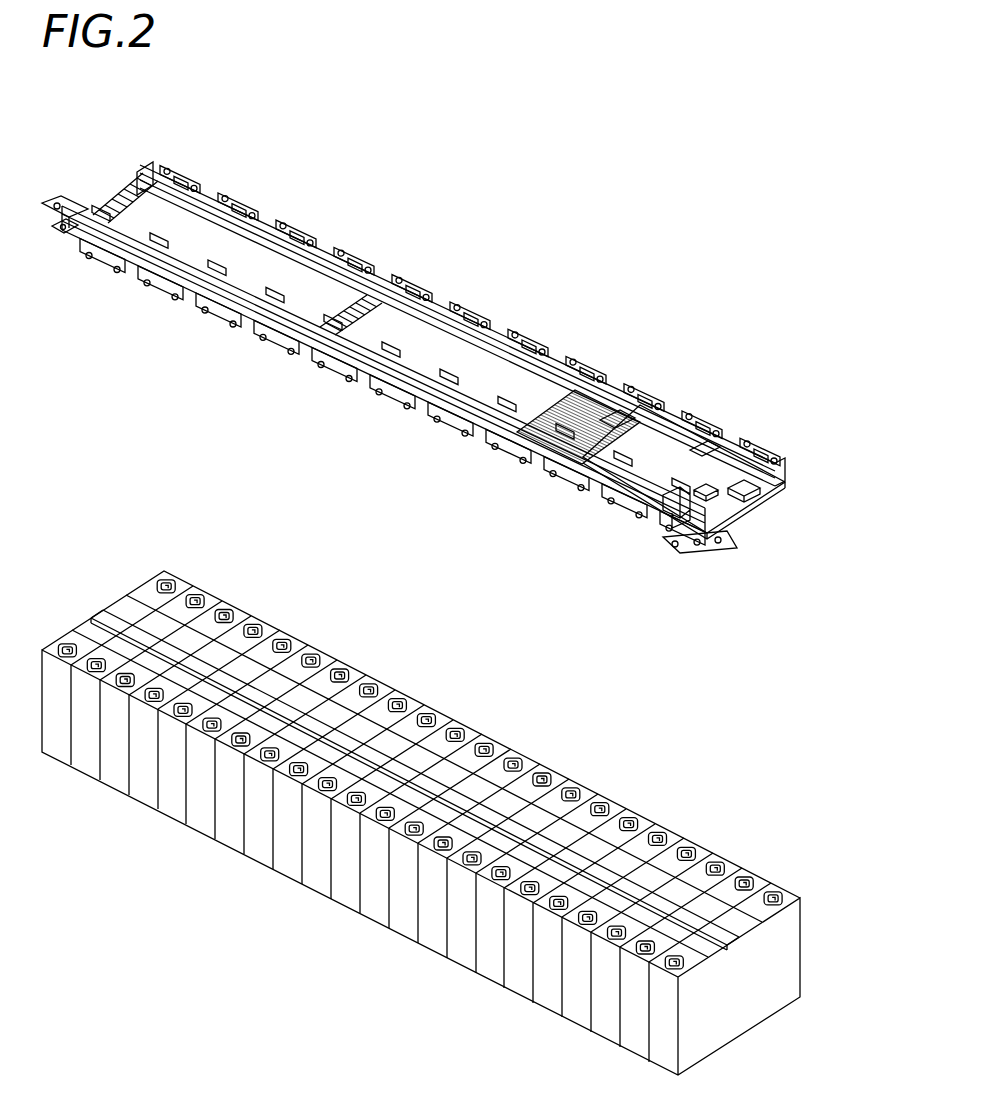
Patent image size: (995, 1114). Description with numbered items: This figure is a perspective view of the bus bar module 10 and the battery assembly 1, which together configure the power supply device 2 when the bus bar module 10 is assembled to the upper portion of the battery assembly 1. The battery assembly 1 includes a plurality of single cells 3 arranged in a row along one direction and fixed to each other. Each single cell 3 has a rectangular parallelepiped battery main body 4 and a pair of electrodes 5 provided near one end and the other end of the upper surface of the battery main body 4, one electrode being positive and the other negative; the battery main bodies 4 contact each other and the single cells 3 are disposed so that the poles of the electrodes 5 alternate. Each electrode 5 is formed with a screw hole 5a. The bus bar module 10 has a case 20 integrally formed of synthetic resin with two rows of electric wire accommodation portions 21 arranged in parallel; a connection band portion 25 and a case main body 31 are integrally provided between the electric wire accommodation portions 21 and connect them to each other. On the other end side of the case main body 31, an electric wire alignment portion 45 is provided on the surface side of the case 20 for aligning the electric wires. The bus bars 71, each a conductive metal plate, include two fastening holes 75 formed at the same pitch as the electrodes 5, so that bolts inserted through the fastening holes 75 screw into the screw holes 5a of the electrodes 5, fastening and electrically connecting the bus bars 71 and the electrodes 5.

The battery assembly 1 is at (408, 800).
The power supply device 2 is at (413, 309).
The single cell 3 is at (52, 757).
The battery main body 4 is at (100, 613).
The electrode 5 is at (166, 580).
The screw hole 5a is at (174, 582).
The bus bar module 10 is at (413, 346).
The case 20 is at (588, 362).
The electric wire accommodation portion 21 is at (262, 226).
The connection band portion 25 is at (128, 203).
The case main body 31 is at (690, 462).
The electric wire alignment portion 45 is at (520, 484).
The bus bar 71 is at (340, 384).
The fastening hole 75 is at (330, 372).